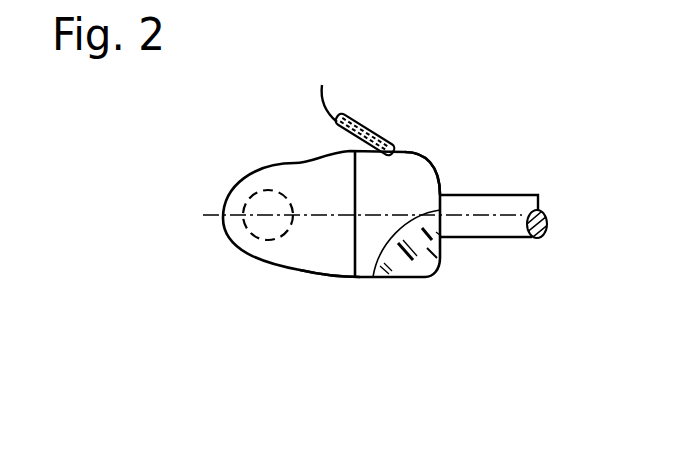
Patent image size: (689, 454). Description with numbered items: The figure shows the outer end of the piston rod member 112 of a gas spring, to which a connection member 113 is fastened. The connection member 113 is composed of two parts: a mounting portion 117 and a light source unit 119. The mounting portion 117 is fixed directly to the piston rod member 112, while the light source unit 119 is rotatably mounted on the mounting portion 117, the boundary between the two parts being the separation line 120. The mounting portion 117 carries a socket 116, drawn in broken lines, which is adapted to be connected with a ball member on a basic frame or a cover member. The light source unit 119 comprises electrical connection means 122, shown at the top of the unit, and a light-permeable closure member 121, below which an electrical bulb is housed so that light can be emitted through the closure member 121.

The piston rod member 112 is at (527, 202).
The connection member 113 is at (325, 282).
The socket 116 is at (238, 202).
The mounting portion 117 is at (303, 253).
The light source unit 119 is at (433, 173).
The separation line 120 is at (356, 250).
The light-permeable closure member 121 is at (427, 248).
The electrical connection means 122 is at (375, 124).